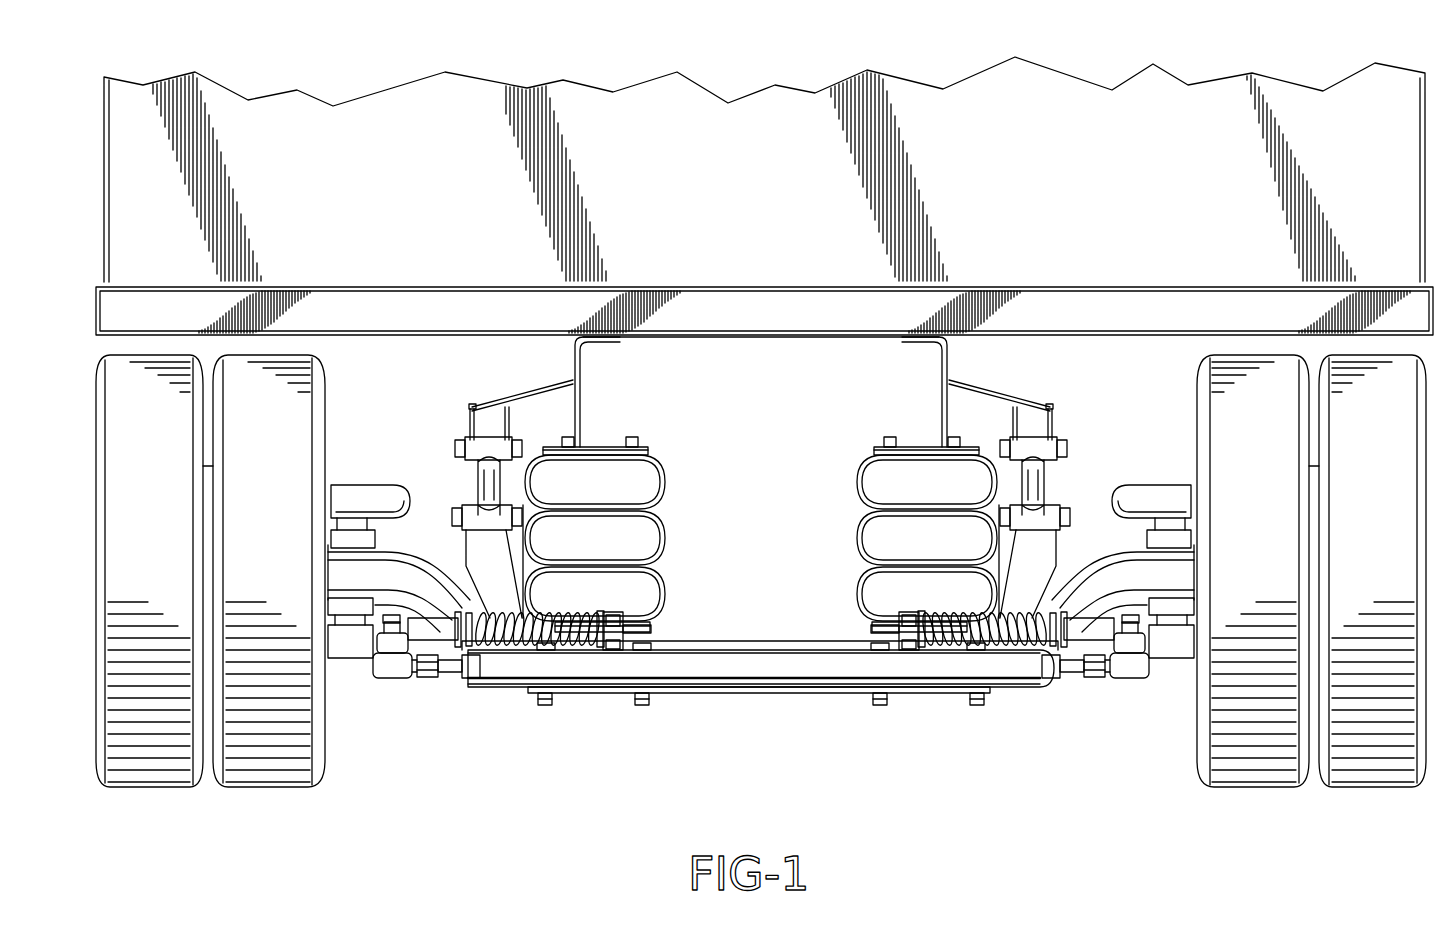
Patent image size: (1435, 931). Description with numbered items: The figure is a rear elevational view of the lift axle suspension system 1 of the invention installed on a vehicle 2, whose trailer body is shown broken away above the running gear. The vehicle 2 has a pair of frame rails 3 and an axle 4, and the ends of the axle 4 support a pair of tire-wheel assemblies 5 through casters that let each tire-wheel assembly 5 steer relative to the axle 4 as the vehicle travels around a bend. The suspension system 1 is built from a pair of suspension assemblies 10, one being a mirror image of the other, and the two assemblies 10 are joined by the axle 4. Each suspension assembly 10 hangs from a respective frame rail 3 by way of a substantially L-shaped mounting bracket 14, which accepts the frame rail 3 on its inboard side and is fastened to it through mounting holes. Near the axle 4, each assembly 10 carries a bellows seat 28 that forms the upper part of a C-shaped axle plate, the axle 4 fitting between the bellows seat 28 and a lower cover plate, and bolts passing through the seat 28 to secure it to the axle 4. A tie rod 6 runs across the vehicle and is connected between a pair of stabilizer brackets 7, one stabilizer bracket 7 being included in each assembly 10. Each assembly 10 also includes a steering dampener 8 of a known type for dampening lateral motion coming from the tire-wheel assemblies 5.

The lift axle suspension system 1 is at (600, 730).
The vehicle 2 is at (1222, 105).
The frame rails 3 is at (573, 354).
The axle 4 is at (351, 578).
The tire-wheel assemblies 5 is at (268, 768).
The tie rod 6 is at (778, 665).
The stabilizer brackets 7 is at (393, 668).
The steering dampener 8 is at (511, 636).
The suspension assemblies 10 is at (664, 445).
The mounting bracket 14 is at (530, 405).
The bellows seat 28 is at (660, 633).